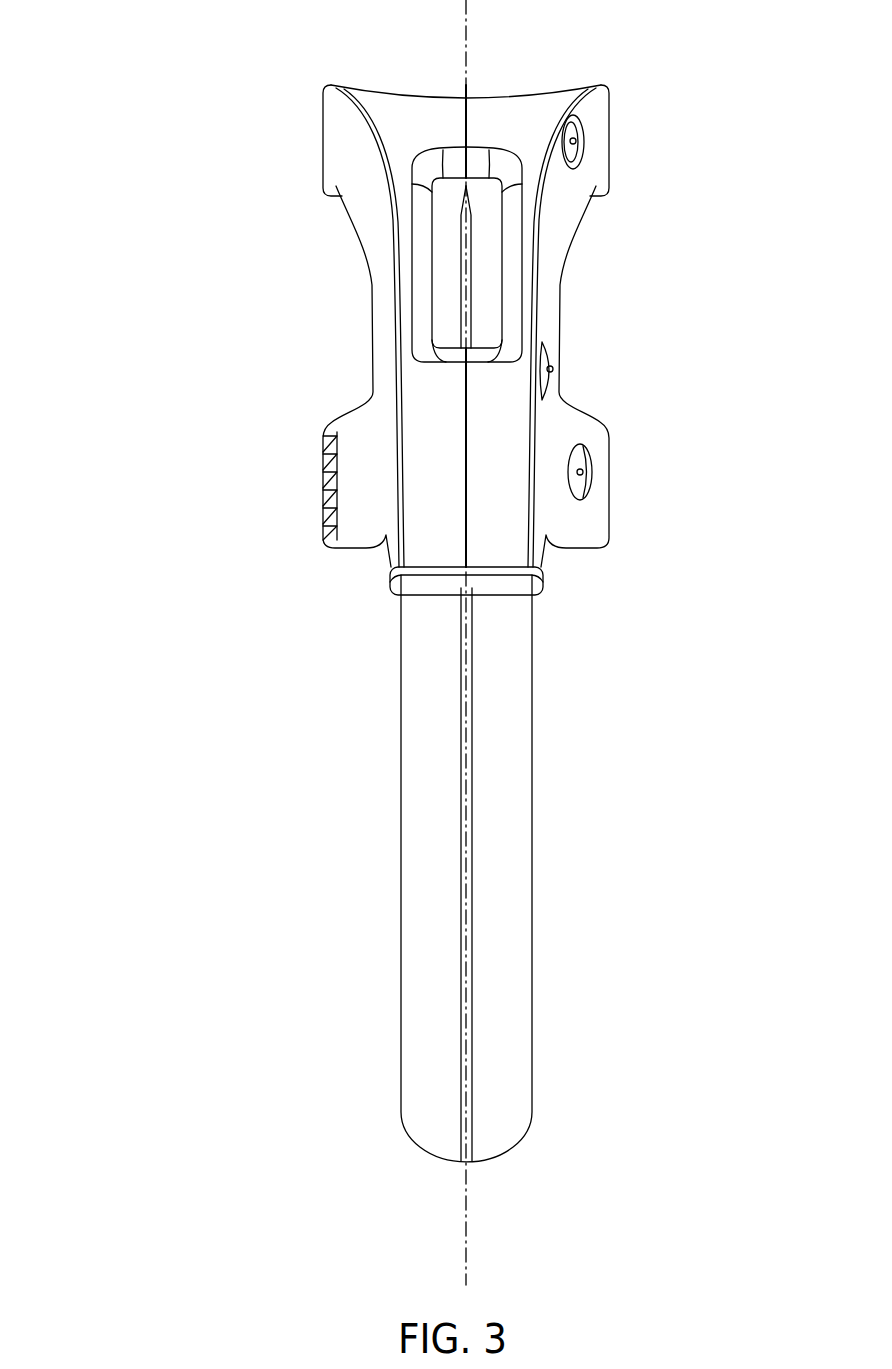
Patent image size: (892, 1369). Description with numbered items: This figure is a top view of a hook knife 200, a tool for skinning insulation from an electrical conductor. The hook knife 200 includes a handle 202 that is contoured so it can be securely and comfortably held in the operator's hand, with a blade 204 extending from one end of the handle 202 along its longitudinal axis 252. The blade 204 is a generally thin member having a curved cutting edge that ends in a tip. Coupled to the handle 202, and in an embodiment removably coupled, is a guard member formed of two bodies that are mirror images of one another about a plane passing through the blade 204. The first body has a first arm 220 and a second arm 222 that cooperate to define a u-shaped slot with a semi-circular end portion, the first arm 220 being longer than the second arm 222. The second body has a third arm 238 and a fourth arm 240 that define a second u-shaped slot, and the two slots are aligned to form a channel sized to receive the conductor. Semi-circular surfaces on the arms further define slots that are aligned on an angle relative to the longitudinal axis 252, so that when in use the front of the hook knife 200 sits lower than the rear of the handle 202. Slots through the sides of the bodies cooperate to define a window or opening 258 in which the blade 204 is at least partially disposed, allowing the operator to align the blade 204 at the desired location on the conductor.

The hook knife 200 is at (128, 160).
The handle 202 is at (533, 826).
The blade 204 is at (462, 283).
The first arm 220 is at (323, 490).
The second arm 222 is at (323, 143).
The third arm 238 is at (609, 497).
The fourth arm 240 is at (609, 157).
The longitudinal axis 252 is at (466, 1205).
The opening 258 is at (483, 222).